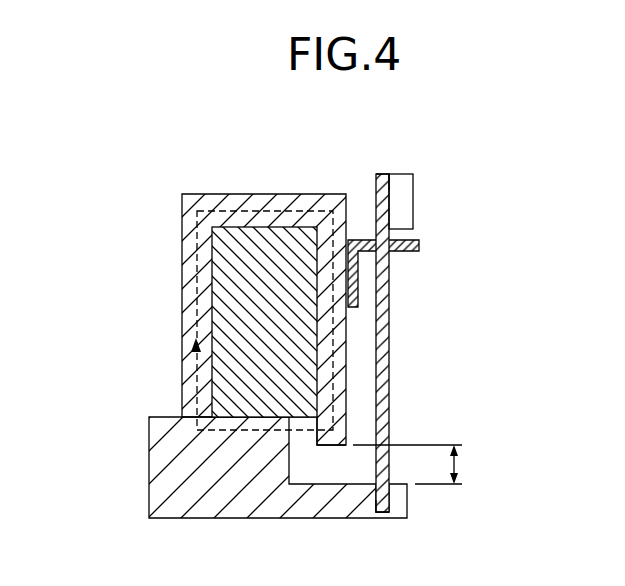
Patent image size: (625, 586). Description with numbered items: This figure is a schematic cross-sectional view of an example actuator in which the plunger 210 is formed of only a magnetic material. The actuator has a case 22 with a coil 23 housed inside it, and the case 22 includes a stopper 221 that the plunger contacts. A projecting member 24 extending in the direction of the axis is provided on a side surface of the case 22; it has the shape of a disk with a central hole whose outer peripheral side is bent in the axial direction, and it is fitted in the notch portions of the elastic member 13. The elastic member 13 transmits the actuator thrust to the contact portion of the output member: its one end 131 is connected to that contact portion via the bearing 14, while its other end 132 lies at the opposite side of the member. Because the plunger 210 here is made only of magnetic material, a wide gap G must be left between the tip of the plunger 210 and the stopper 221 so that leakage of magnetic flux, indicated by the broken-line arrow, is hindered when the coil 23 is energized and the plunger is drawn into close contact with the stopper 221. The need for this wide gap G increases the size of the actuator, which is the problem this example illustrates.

The elastic member 13 is at (390, 354).
The one end of the elastic member 131 is at (383, 173).
The other end of the elastic member 132 is at (381, 513).
The bearing 14 is at (403, 173).
The case 22 is at (267, 193).
The stopper 221 is at (317, 433).
The coil 23 is at (212, 321).
The projecting member 24 is at (420, 245).
The plunger 210 is at (132, 462).
The gap G is at (416, 464).